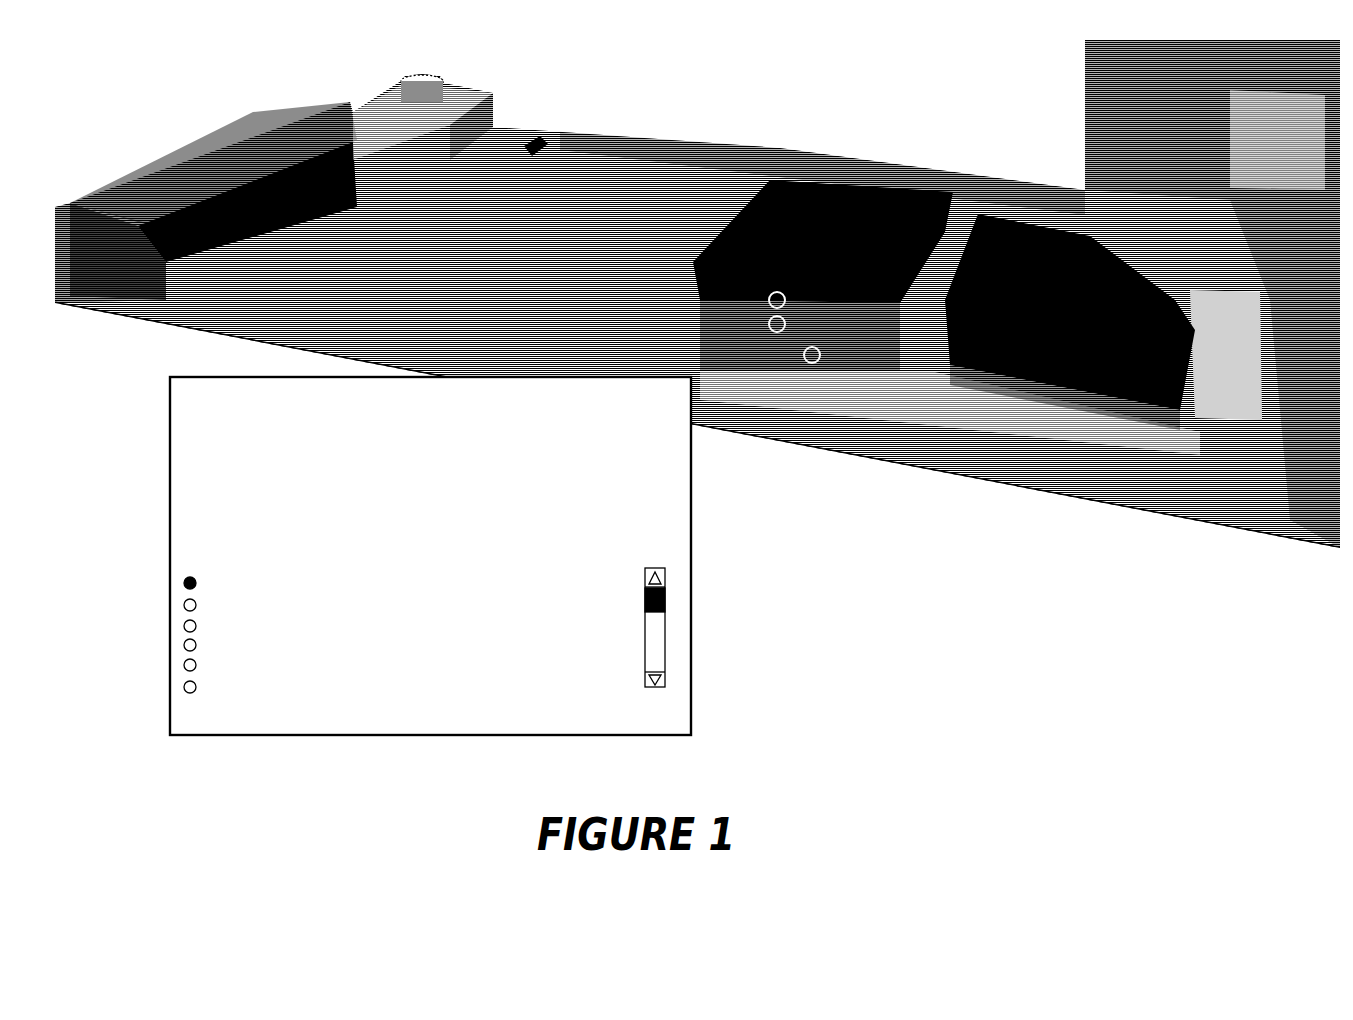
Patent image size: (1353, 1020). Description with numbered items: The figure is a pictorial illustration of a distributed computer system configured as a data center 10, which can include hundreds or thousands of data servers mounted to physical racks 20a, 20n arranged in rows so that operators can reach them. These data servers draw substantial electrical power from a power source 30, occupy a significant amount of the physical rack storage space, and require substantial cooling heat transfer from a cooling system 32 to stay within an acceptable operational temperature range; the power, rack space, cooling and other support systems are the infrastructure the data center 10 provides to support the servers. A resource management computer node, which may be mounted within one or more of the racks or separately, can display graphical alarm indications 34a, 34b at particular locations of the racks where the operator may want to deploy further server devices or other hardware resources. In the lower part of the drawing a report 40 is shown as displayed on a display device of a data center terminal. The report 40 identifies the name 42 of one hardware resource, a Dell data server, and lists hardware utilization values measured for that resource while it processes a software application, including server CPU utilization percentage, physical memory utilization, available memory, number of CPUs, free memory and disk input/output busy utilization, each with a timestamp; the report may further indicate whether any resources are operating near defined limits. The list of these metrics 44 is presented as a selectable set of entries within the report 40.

The data center 10 is at (676, 83).
The physical rack 20a is at (817, 188).
The physical rack 20n is at (977, 360).
The power source 30 is at (288, 112).
The cooling system 32 is at (532, 148).
The graphical alarm indication 34a is at (777, 337).
The graphical alarm indication 34b is at (810, 360).
The report 40 is at (170, 395).
The name 42 is at (233, 503).
The metric list 44 is at (186, 580).